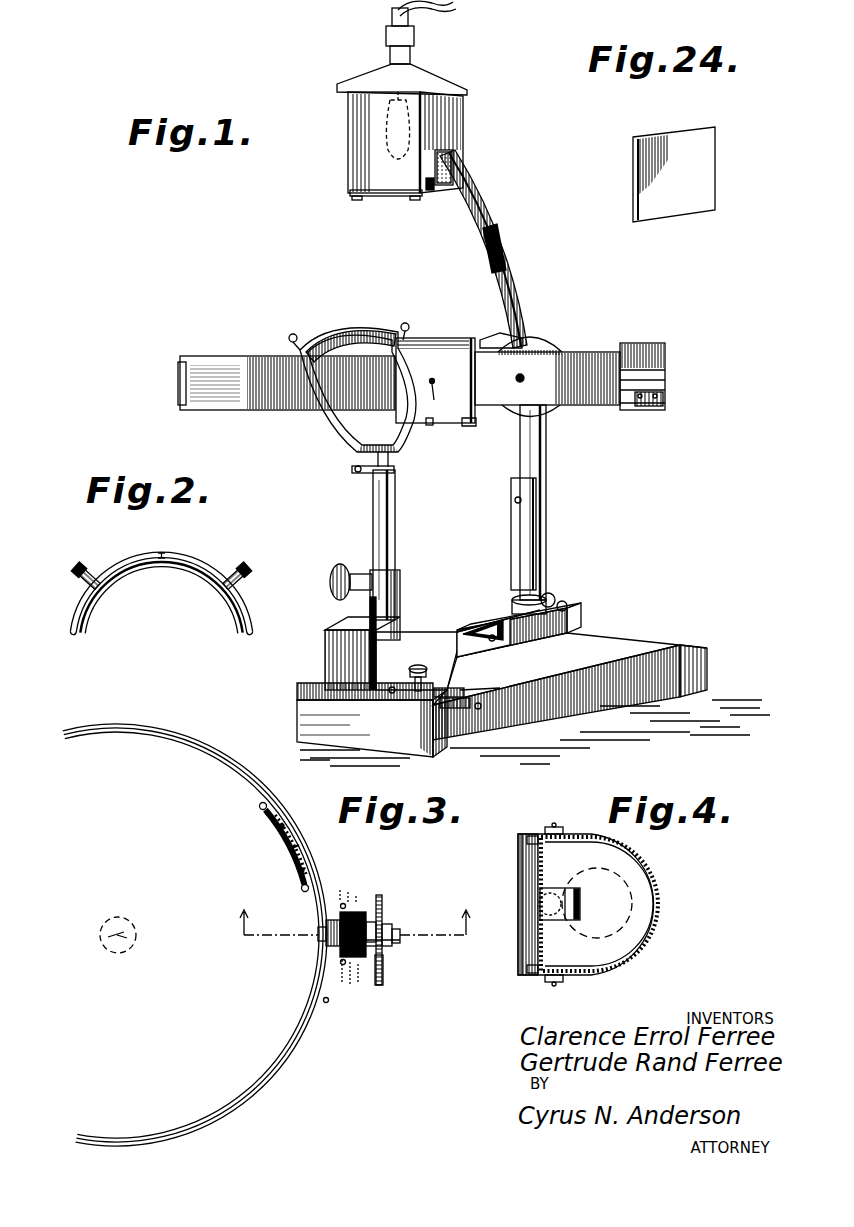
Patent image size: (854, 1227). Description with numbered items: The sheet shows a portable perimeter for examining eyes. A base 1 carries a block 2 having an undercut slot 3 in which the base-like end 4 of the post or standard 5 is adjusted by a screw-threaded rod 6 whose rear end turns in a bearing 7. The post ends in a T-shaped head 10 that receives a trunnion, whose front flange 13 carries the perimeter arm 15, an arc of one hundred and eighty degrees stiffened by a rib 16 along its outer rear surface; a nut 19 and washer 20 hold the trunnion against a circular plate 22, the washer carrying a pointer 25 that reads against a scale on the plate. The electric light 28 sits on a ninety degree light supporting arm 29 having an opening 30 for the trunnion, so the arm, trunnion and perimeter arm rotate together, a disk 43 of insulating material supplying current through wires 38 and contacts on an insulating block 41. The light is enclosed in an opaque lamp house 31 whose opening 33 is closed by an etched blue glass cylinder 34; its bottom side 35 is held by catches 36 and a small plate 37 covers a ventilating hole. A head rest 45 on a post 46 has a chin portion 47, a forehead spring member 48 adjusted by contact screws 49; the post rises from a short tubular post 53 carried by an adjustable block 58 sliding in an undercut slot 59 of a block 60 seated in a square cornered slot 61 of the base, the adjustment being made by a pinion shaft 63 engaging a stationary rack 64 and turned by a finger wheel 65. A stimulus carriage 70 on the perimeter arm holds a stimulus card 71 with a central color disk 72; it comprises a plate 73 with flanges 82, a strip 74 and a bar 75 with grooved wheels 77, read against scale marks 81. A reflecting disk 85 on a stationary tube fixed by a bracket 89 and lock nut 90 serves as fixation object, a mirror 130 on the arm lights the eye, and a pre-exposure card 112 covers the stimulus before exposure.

In FIG. 1, the base 1 is at (628, 650).
In FIG. 1, the block 2 is at (574, 624).
In FIG. 1, the undercut slot 3 is at (457, 632).
In FIG. 1, the base-like end 4 is at (528, 612).
In FIG. 1, the post or standard 5 is at (548, 501).
In FIG. 1, the screw-threaded rod 6 is at (567, 604).
In FIG. 1, the bearing 7 is at (548, 594).
In FIG. 3, the T-shaped head 10 is at (381, 1003).
In FIG. 3, the flange 13 is at (336, 964).
In FIG. 1, the perimeter arm 15 is at (602, 352).
In FIG. 3, the perimeter arm 15 is at (262, 1095).
In FIG. 1, the rib 16 is at (668, 368).
In FIG. 3, the rib 16 is at (277, 1082).
In FIG. 3, the nut 19 is at (400, 943).
In FIG. 3, the washer 20 is at (383, 948).
In FIG. 1, the circular plate 22 is at (545, 352).
In FIG. 3, the circular plate 22 is at (383, 978).
In FIG. 3, the pointer 25 is at (383, 910).
In FIG. 1, the electric light 28 is at (385, 128).
In FIG. 3, the electric light 28 is at (108, 948).
In FIG. 4, the electric light 28 is at (630, 896).
In FIG. 1, the light supporting arm 29 is at (505, 221).
In FIG. 3, the light supporting arm 29 is at (326, 930).
In FIG. 1, the opening 30 is at (511, 524).
In FIG. 1, the lamp house 31 is at (350, 143).
In FIG. 4, the lamp house 31 is at (520, 972).
In FIG. 1, the opening 33 is at (444, 152).
In FIG. 4, the opening 33 is at (570, 838).
In FIG. 1, the blue glass cylinder 34 is at (452, 172).
In FIG. 4, the blue glass cylinder 34 is at (663, 906).
In FIG. 1, the bottom side 35 is at (413, 197).
In FIG. 4, the bottom side 35 is at (522, 853).
In FIG. 1, the catches 36 is at (430, 192).
In FIG. 4, the catches 36 is at (552, 826).
In FIG. 4, the plate 37 is at (552, 898).
In FIG. 1, the wires 38 is at (437, 17).
In FIG. 3, the wires 38 is at (339, 907).
In FIG. 3, the insulating block 41 is at (367, 920).
In FIG. 3, the disk of insulating material 43 is at (341, 910).
In FIG. 1, the head rest 45 is at (350, 432).
In FIG. 2, the head rest 45 is at (118, 568).
In FIG. 1, the post 46 is at (372, 516).
In FIG. 1, the chin rest portion 47 is at (354, 470).
In FIG. 1, the spring member 48 is at (347, 330).
In FIG. 2, the spring member 48 is at (205, 578).
In FIG. 1, the adjustable contact screws 49 is at (289, 337).
In FIG. 2, the adjustable contact screws 49 is at (80, 562).
In FIG. 1, the short tubular post 53 is at (387, 594).
In FIG. 1, the adjustable block 58 is at (392, 690).
In FIG. 1, the undercut slot 59 is at (470, 702).
In FIG. 1, the block 60 is at (500, 689).
In FIG. 1, the square cornered slot 61 is at (393, 694).
In FIG. 1, the pinion shaft 63 is at (444, 688).
In FIG. 1, the stationary rack 64 is at (481, 708).
In FIG. 1, the finger wheel 65 is at (424, 666).
In FIG. 1, the stimulus carriage 70 is at (472, 426).
In FIG. 3, the stimulus carriage 70 is at (301, 889).
In FIG. 1, the stimulus card 71 is at (430, 345).
In FIG. 3, the stimulus card 71 is at (290, 847).
In FIG. 1, the disk 72 is at (434, 400).
In FIG. 3, the plate 73 is at (259, 806).
In FIG. 3, the strip 74 is at (290, 838).
In FIG. 3, the bar 75 is at (300, 852).
In FIG. 3, the grooved wheels 77 is at (285, 823).
In FIG. 1, the scale marks 81 is at (640, 406).
In FIG. 1, the inwardly turned flanges 82 is at (390, 388).
In FIG. 3, the inwardly turned flanges 82 is at (266, 814).
In FIG. 1, the reflecting disk 85 is at (539, 370).
In FIG. 3, the reflecting disk 85 is at (338, 944).
In FIG. 3, the bracket 89 is at (392, 930).
In FIG. 1, the lock nut 90 is at (503, 336).
In FIG. 3, the lock nut 90 is at (400, 937).
In FIG. 24, the pre-exposure card 112 is at (706, 152).
In FIG. 1, the mirror 130 is at (490, 248).